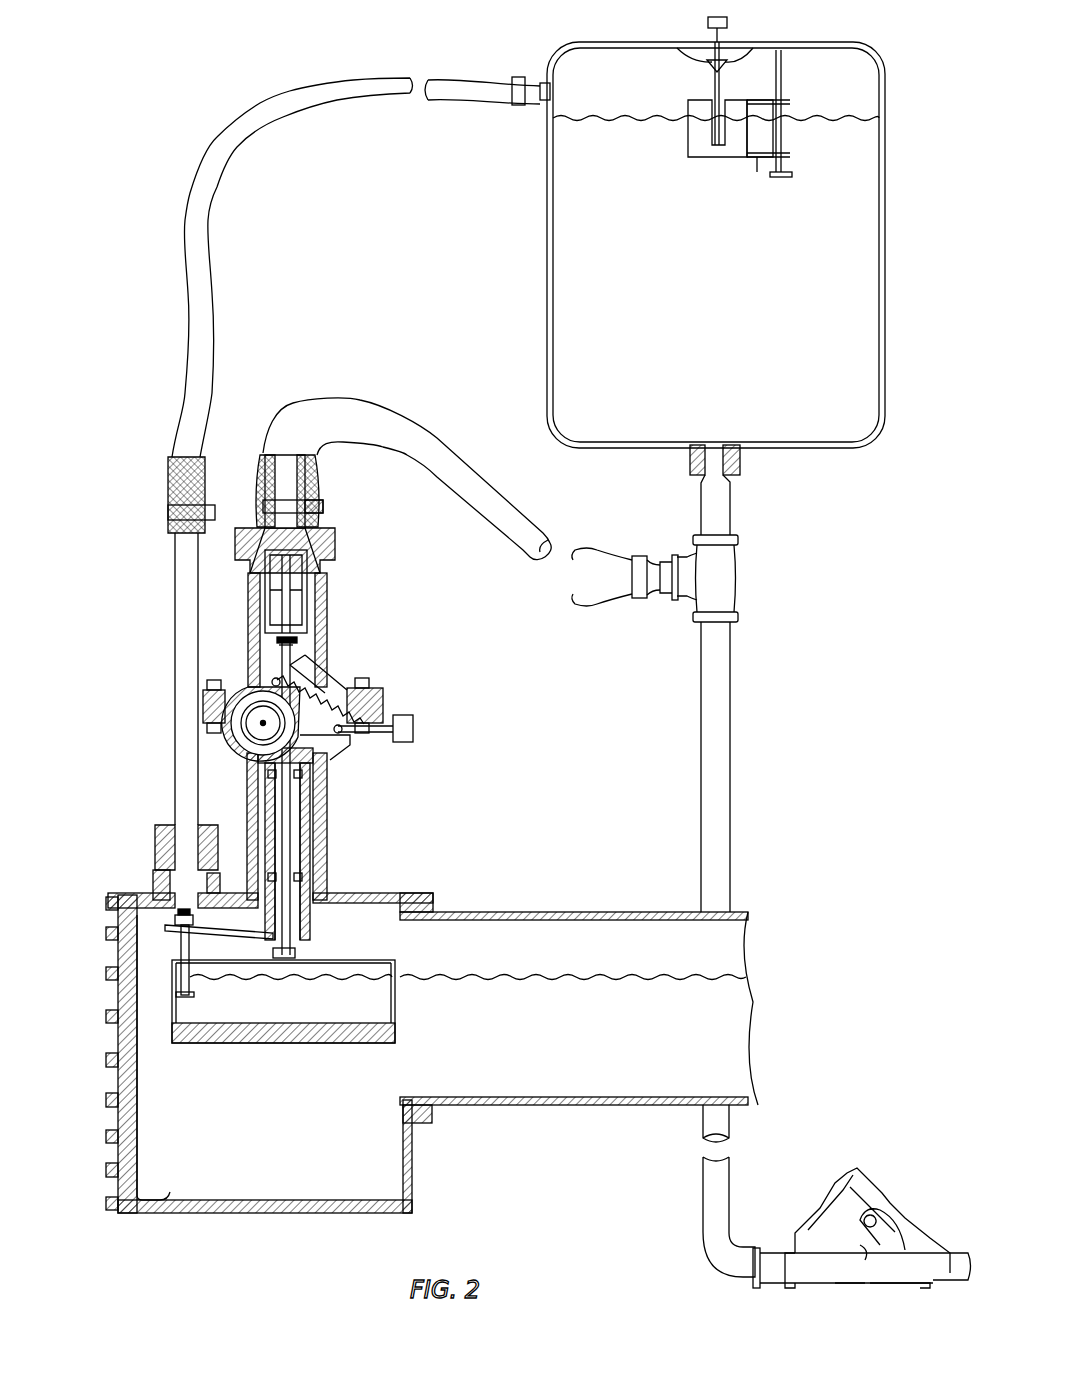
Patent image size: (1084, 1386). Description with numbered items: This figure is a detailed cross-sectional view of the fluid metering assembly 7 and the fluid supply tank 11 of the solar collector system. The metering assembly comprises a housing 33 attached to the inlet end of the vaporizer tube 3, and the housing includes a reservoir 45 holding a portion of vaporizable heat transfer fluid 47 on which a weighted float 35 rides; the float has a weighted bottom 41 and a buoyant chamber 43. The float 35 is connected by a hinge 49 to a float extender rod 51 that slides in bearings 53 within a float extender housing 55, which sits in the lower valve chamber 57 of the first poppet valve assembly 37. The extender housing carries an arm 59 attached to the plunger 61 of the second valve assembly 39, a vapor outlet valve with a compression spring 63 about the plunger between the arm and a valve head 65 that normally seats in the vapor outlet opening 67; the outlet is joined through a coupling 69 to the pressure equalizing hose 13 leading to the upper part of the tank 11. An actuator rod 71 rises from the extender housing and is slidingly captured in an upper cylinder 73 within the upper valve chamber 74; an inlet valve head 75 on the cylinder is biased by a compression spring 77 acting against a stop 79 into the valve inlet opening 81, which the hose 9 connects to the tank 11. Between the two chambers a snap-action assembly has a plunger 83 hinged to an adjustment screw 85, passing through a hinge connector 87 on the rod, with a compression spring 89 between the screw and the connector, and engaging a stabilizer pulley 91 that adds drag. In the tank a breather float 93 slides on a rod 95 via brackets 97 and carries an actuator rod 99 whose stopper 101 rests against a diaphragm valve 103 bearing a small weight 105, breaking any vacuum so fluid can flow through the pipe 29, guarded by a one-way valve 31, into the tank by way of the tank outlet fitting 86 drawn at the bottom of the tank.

The vaporizer tube 3 is at (605, 914).
The fluid metering assembly 7 is at (201, 1223).
The hose 9 is at (338, 395).
The fluid supply tank 11 is at (548, 243).
The pressure equalizing hose 13 is at (325, 85).
The pipe 29 is at (740, 785).
The one-way valve 31 is at (858, 1200).
The housing 33 is at (373, 1210).
The weighted float 35 is at (275, 1065).
The first poppet valve assembly 37 is at (356, 809).
The second valve assembly 39 is at (129, 889).
The weighted bottom 41 is at (860, 117).
The buoyant chamber 43 is at (337, 985).
The reservoir 45 is at (355, 1169).
The heat transfer fluid 47 is at (493, 947).
The hinge 49 is at (295, 950).
The float extender rod 51 is at (290, 860).
The bearings 53 is at (302, 778).
The float extender housing 55 is at (310, 803).
The lower valve chamber 57 is at (312, 823).
The arm 59 is at (243, 920).
The plunger 61 is at (180, 980).
The compression spring 63 is at (172, 916).
The valve head 65 is at (155, 865).
The vapor outlet opening 67 is at (216, 870).
The coupling 69 is at (160, 825).
The actuator rod 71 is at (280, 618).
The upper cylinder 73 is at (265, 593).
The upper valve chamber 74 is at (327, 616).
The inlet valve head 75 is at (290, 520).
The compression spring 77 is at (275, 648).
The stop 79 is at (282, 647).
The valve inlet opening 81 is at (305, 495).
The control lever or plunger 83 is at (308, 655).
The adjustment screw 85 is at (413, 730).
The tank outlet 86 is at (717, 451).
The hinge connector 87 is at (320, 680).
The compression spring 89 is at (326, 700).
The stabilizer pulley 91 is at (232, 732).
The float 93 is at (684, 139).
The rod 95 is at (787, 140).
The brackets 97 is at (758, 160).
The actuator rod 99 is at (708, 90).
The stopper 101 is at (721, 70).
The diaphragm valve 103 is at (697, 61).
The small weight 105 is at (727, 20).